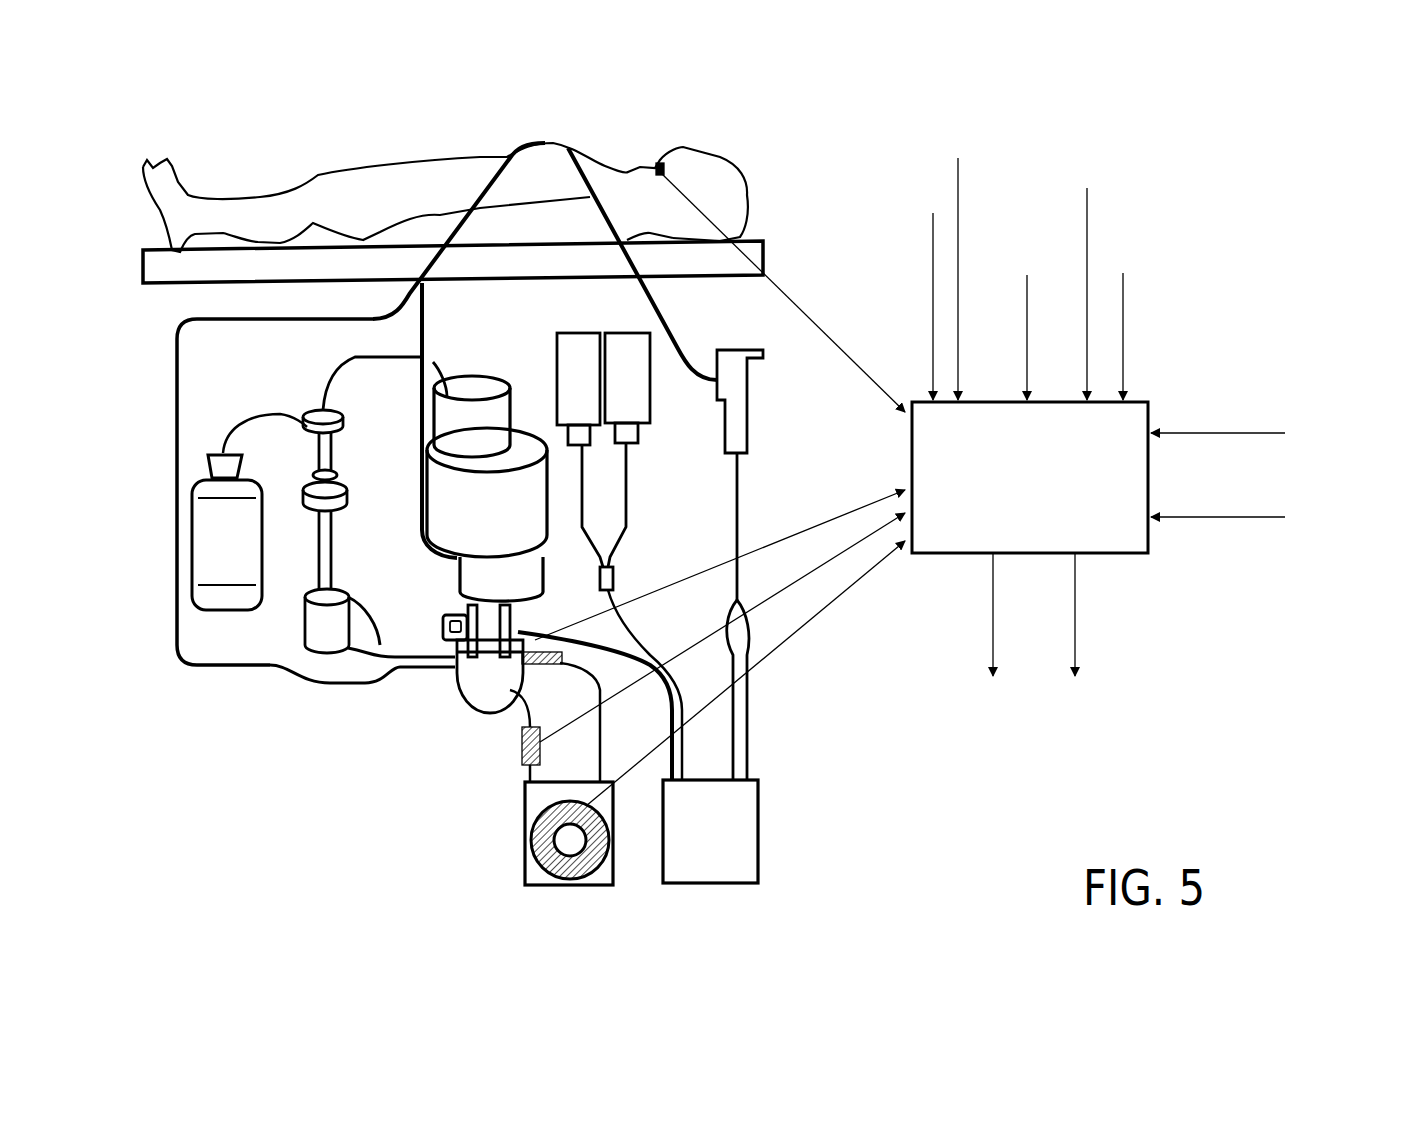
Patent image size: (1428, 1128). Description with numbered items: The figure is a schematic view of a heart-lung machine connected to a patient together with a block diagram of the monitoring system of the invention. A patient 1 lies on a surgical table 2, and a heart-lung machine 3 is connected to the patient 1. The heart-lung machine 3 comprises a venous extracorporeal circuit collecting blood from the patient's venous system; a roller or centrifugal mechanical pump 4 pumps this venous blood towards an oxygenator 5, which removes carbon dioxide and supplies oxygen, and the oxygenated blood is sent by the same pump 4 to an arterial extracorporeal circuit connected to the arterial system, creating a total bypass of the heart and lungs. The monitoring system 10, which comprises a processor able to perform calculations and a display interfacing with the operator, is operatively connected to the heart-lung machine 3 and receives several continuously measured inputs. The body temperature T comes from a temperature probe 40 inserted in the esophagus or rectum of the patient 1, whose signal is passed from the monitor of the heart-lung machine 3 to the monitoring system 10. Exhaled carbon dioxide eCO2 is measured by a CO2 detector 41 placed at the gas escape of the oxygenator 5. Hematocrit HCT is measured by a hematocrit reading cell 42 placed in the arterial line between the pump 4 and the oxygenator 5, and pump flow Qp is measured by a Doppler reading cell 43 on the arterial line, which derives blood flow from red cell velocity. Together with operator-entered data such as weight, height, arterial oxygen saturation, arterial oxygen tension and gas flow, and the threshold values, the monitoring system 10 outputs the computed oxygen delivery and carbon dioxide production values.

The patient 1 is at (373, 152).
The surgical table 2 is at (158, 262).
The heart-lung machine 3 is at (165, 468).
The roller or centrifugal mechanical pump 4 is at (667, 746).
The oxygenator 5 is at (453, 690).
The monitoring system 10 is at (1120, 528).
The temperature probe 40 is at (657, 167).
The CO2 detector 41 is at (555, 665).
The hematocrit reading cell 42 is at (522, 752).
The Doppler reading cell 43 is at (553, 875).